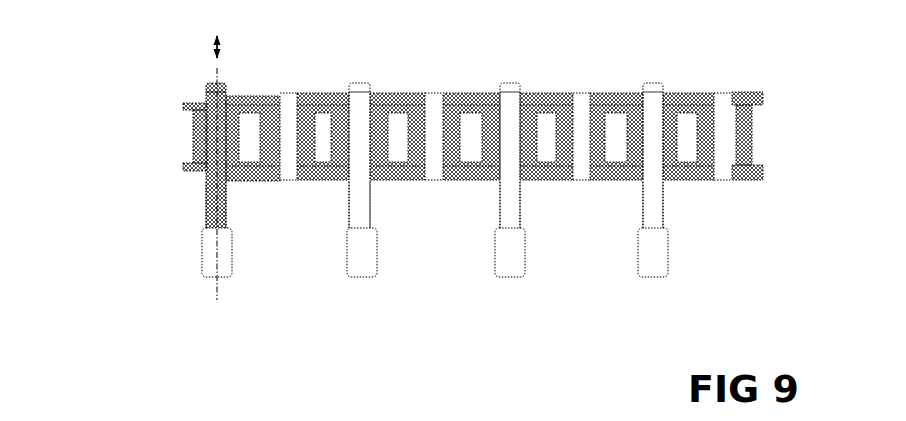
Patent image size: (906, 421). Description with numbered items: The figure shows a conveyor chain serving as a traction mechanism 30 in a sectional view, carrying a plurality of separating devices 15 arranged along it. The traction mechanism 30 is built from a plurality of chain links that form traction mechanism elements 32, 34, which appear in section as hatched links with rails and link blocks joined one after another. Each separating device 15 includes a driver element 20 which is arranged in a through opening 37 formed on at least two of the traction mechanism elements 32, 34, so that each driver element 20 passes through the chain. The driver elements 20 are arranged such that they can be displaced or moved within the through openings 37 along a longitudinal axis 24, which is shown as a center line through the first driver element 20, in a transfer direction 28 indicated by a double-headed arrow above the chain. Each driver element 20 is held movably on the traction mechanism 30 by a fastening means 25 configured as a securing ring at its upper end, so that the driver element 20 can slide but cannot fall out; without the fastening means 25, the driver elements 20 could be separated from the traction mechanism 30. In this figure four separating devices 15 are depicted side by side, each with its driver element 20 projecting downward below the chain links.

The separating device 15 is at (207, 300).
The driver element 20 is at (206, 218).
The longitudinal axis 24 is at (204, 283).
The fastening means 25 is at (200, 92).
The transfer direction 28 is at (222, 47).
The traction mechanism 30 is at (124, 105).
The traction mechanism element 32 is at (380, 100).
The traction mechanism element 34 is at (345, 118).
The through opening 37 is at (230, 168).